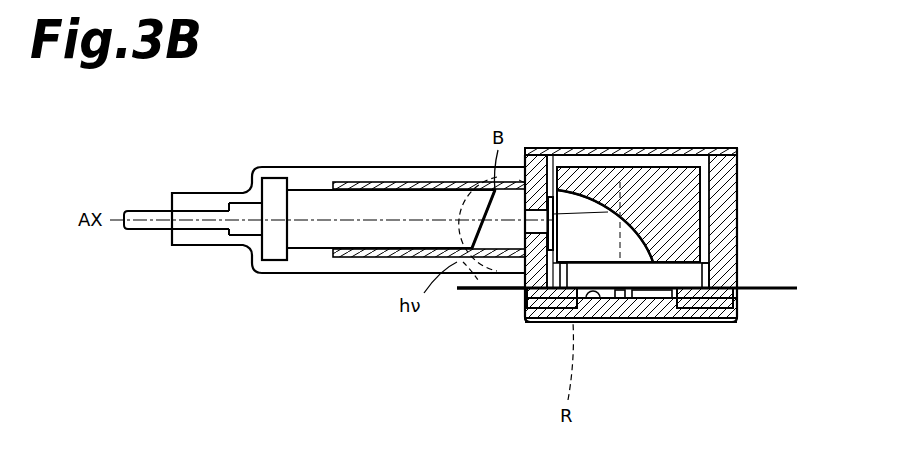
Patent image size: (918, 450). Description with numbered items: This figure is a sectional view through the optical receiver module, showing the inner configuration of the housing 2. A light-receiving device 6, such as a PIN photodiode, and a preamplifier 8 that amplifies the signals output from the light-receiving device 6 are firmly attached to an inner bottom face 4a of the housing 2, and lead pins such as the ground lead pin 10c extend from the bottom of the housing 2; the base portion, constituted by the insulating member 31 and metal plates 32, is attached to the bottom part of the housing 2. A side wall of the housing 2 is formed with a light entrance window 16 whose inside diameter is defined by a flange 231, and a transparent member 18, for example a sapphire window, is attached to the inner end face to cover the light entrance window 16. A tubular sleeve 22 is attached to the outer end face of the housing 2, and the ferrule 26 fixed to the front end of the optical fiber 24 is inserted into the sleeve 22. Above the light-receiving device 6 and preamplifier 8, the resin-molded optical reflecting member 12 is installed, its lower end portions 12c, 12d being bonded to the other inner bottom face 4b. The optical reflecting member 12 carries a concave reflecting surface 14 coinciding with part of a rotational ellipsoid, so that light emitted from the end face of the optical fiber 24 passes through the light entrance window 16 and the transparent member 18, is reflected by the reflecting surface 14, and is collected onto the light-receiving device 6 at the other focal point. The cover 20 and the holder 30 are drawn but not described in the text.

The housing 2 is at (737, 190).
The inner bottom face 4a is at (593, 300).
The other inner bottom face 4b is at (553, 308).
The light-receiving device 6 is at (622, 298).
The preamplifier 8 is at (662, 298).
The ground lead pin 10c is at (460, 290).
The optical reflecting member 12 is at (680, 167).
The lower end portion 12c is at (709, 272).
The lower end portion 12d is at (527, 318).
The reflecting surface 14 is at (620, 192).
The light entrance window 16 is at (528, 232).
The transparent member 18 is at (549, 197).
The lid 20 is at (722, 148).
The sleeve 22 is at (395, 182).
The optical fiber 24 is at (152, 212).
The ferrule 26 is at (314, 190).
The holder 30 is at (270, 167).
The insulating member 31 is at (712, 318).
The metal plate 32 is at (695, 323).
The flange 231 is at (519, 180).